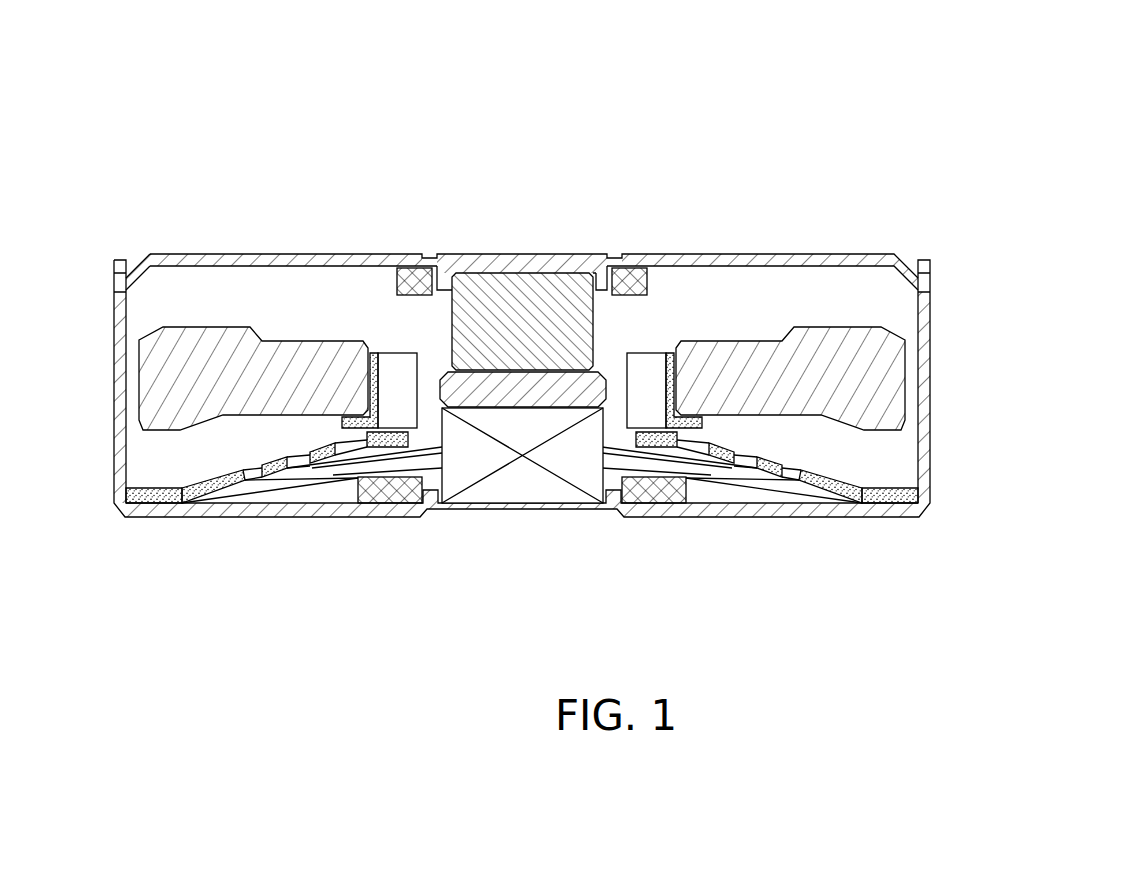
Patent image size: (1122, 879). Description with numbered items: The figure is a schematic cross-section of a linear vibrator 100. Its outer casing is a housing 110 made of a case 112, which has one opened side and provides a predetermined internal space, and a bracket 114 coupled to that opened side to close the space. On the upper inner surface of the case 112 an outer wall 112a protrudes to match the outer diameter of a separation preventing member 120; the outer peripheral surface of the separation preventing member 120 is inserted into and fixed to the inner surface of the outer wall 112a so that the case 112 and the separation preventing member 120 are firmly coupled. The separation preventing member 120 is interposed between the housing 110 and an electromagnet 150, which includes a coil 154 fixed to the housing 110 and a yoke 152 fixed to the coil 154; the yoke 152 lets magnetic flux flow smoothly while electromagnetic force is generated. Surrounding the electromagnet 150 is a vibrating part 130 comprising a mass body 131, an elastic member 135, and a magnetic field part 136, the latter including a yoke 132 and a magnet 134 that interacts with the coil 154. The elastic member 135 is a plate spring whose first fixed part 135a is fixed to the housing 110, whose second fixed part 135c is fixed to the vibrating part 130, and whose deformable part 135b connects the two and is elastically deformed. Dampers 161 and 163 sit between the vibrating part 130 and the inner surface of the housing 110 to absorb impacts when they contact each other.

The linear vibrator 100 is at (378, 79).
The housing 110 is at (247, 158).
The case 112 is at (118, 318).
The outer wall 112a is at (602, 288).
The bracket 114 is at (210, 263).
The separation preventing member 120 is at (512, 297).
The vibrating part 130 is at (1050, 220).
The mass body 131 is at (893, 373).
The yoke 132 is at (677, 370).
The magnet 134 is at (650, 352).
The magnetic field part 136 is at (953, 190).
The elastic member 135 is at (1024, 415).
The first fixed part 135a is at (918, 498).
The deformable part 135b is at (787, 457).
The second fixed part 135c is at (703, 428).
The electromagnet 150 is at (587, 585).
The yoke 152 is at (502, 390).
The coil 154 is at (570, 470).
The damper 161 is at (400, 272).
The damper 163 is at (350, 493).